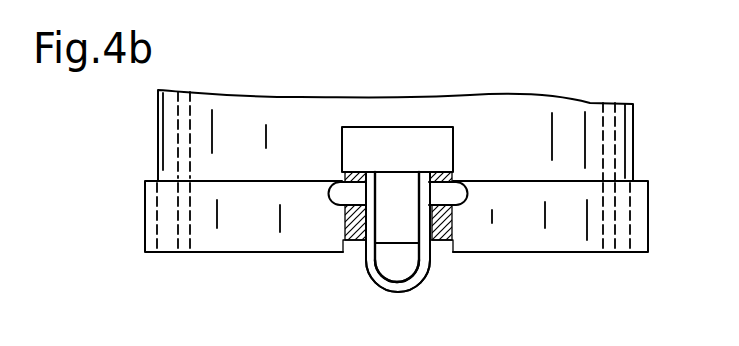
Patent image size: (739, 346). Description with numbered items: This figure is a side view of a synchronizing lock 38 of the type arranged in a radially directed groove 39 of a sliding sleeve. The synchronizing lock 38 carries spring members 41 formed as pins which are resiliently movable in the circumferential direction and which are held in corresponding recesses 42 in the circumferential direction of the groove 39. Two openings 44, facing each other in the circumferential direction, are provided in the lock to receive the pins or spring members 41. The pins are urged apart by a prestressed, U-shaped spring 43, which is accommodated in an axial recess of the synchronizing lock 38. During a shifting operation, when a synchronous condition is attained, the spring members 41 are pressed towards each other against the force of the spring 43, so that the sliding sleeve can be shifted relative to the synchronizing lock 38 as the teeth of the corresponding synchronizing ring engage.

The synchronizing lock 38 is at (387, 180).
The radially directed groove 39 is at (415, 155).
The spring member 41 is at (449, 182).
The recess 42 is at (466, 191).
The U-shaped spring 43 is at (404, 268).
The opening 44 is at (341, 188).